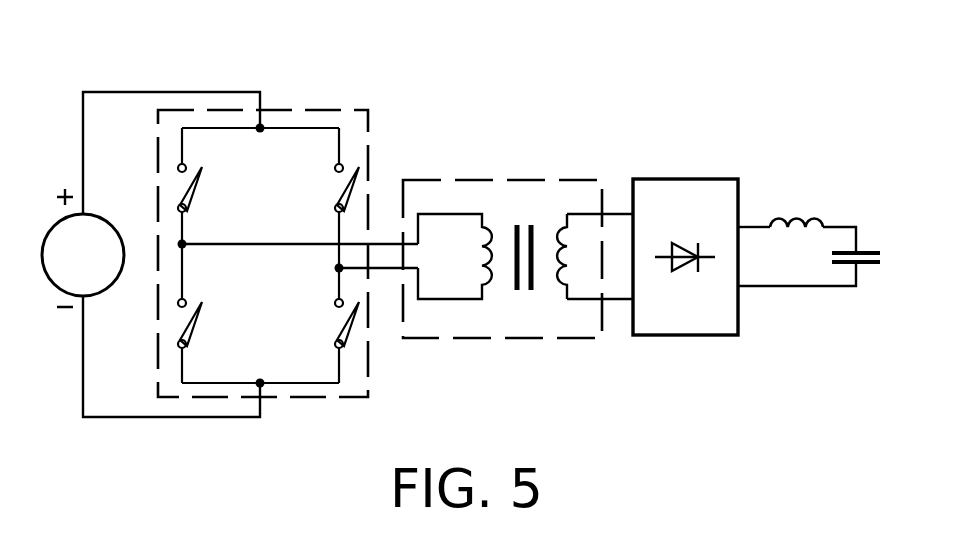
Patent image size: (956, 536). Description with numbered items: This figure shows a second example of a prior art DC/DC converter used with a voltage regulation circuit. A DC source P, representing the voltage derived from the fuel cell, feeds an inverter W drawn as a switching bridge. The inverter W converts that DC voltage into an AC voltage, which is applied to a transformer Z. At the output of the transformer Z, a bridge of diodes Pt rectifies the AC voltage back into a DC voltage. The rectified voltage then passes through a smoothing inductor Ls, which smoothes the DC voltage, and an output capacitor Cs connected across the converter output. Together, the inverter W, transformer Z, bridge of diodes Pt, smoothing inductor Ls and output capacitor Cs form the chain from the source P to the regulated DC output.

The DC power source P is at (64, 278).
The inverter W is at (287, 113).
The transformer Z is at (526, 189).
The bridge of diodes Pt is at (670, 190).
The smoothing inductor Ls is at (813, 208).
The output capacitor Cs is at (838, 264).